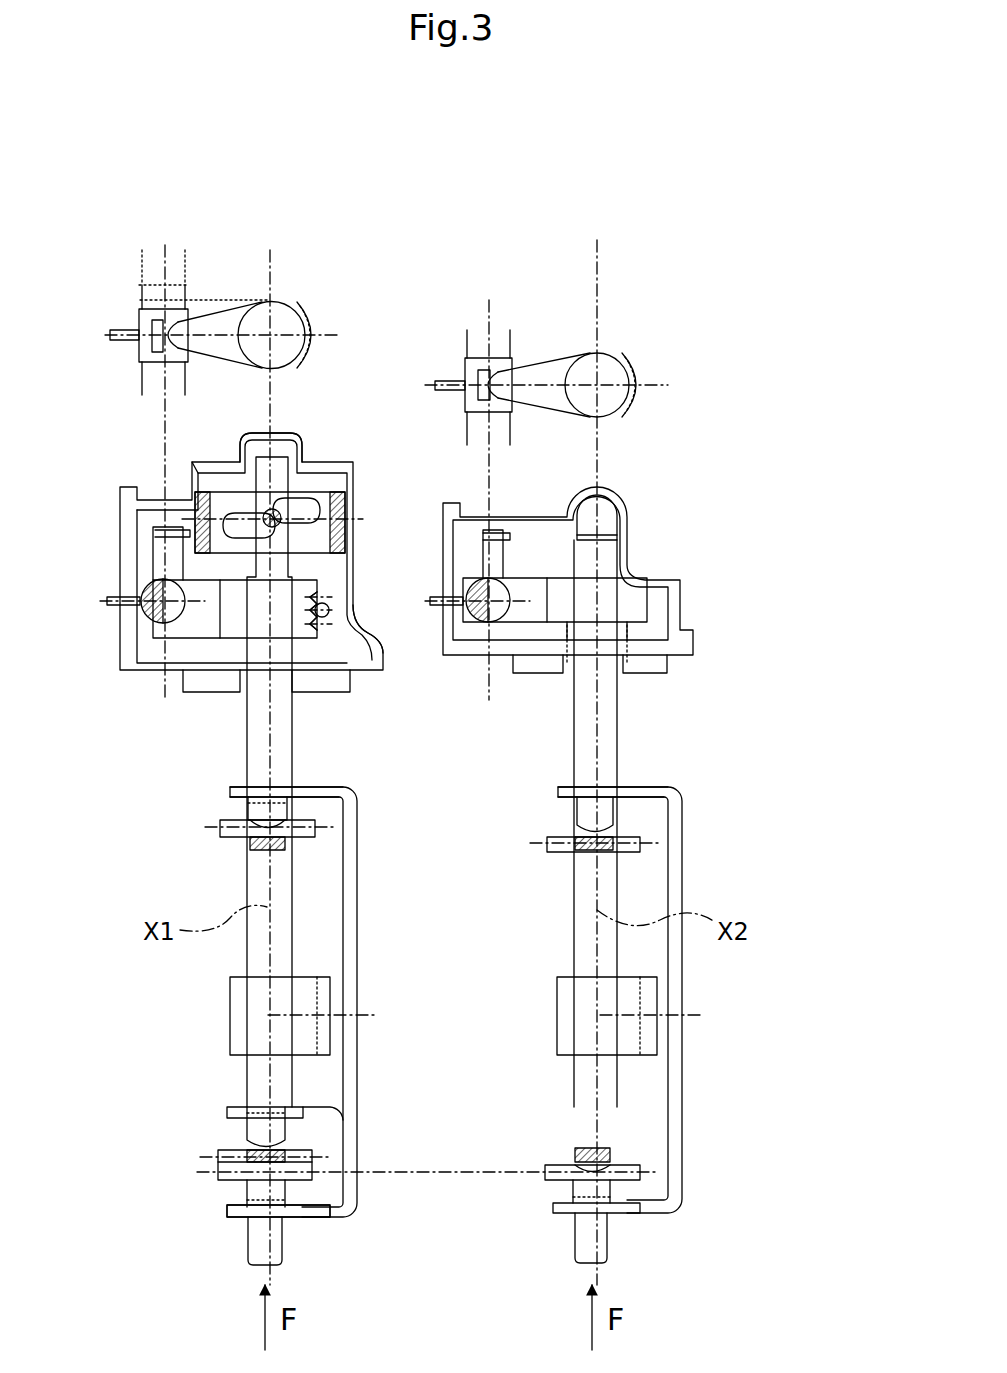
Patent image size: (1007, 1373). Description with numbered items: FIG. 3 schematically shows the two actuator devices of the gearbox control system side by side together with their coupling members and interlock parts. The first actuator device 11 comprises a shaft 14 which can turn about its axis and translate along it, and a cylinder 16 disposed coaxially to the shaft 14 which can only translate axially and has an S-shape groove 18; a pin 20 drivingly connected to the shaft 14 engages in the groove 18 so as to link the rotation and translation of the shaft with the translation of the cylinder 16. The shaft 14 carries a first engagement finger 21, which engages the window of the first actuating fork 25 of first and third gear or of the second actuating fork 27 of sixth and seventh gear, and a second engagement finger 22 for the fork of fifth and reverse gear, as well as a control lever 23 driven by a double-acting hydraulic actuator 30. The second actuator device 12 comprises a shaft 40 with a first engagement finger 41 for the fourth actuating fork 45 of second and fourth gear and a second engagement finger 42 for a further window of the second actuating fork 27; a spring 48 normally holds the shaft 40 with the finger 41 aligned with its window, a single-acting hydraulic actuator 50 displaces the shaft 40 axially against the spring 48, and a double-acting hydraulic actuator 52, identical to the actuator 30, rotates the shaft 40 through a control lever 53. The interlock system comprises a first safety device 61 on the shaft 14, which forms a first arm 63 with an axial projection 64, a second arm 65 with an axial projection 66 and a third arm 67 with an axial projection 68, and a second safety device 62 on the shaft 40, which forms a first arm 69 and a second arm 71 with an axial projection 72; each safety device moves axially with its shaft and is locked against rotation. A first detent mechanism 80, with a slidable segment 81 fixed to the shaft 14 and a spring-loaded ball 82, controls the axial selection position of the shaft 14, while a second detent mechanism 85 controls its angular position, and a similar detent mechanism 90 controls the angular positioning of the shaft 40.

The actuator device 11 is at (117, 515).
The second actuator device 12 is at (645, 543).
The shaft 14 is at (290, 318).
The cylinder 16 is at (308, 452).
The S-shape groove 18 is at (340, 512).
The pin 20 is at (282, 527).
The first engagement finger 21 is at (245, 1160).
The second engagement finger 22 is at (255, 848).
The control lever 23 is at (262, 348).
The first actuating fork 25 is at (310, 1155).
The second actuating fork 27 is at (302, 1180).
The actuator 30 is at (142, 300).
The shaft 40 is at (610, 380).
The first engagement finger 41 is at (590, 850).
The second engagement finger 42 is at (583, 1148).
The fourth actuating fork 45 is at (555, 842).
The spring 48 is at (632, 663).
The single-acting hydraulic actuator 50 is at (607, 530).
The double-acting hydraulic actuator 52 is at (467, 343).
The control lever 53 is at (545, 378).
The first safety device 61 is at (350, 885).
The second safety device 62 is at (683, 980).
The first arm 63 is at (235, 1112).
The axial projection 64 is at (252, 1133).
The second arm 65 is at (312, 1212).
The axial projection 66 is at (257, 1195).
The third arm 67 is at (235, 795).
The axial projection 68 is at (275, 808).
The first arm 69 is at (560, 795).
The second arm 71 is at (625, 1212).
The axial projection 72 is at (580, 1187).
The first detent mechanism 80 is at (332, 598).
The slidable segment 81 is at (316, 628).
The ball 82 is at (335, 610).
The second detent mechanism 85 is at (322, 1040).
The detent mechanism 90 is at (652, 1042).